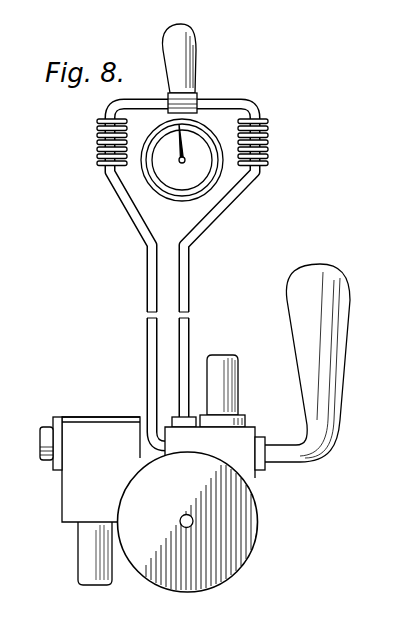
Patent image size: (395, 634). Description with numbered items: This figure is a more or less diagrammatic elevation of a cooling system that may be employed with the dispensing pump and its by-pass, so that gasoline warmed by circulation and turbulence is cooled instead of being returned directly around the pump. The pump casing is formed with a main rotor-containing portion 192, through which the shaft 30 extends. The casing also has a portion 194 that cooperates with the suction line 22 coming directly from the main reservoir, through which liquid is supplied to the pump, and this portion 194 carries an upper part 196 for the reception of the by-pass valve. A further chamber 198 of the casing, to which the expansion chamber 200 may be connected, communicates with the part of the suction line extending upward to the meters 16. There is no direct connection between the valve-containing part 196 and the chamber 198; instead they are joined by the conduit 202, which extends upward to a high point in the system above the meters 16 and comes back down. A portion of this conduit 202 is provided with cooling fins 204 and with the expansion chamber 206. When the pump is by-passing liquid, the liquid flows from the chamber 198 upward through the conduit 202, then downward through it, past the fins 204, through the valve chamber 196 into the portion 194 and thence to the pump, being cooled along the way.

The meters 16 is at (158, 182).
The suction line 22 is at (233, 382).
The shaft 30 is at (190, 528).
The main rotor-containing portion 192 is at (250, 528).
The casing portion 194 is at (72, 490).
The upper part 196 is at (98, 417).
The chamber 198 is at (250, 468).
The expansion chamber 200 is at (330, 352).
The conduit 202 is at (190, 288).
The cooling fins 204 is at (268, 126).
The expansion chamber 206 is at (199, 60).